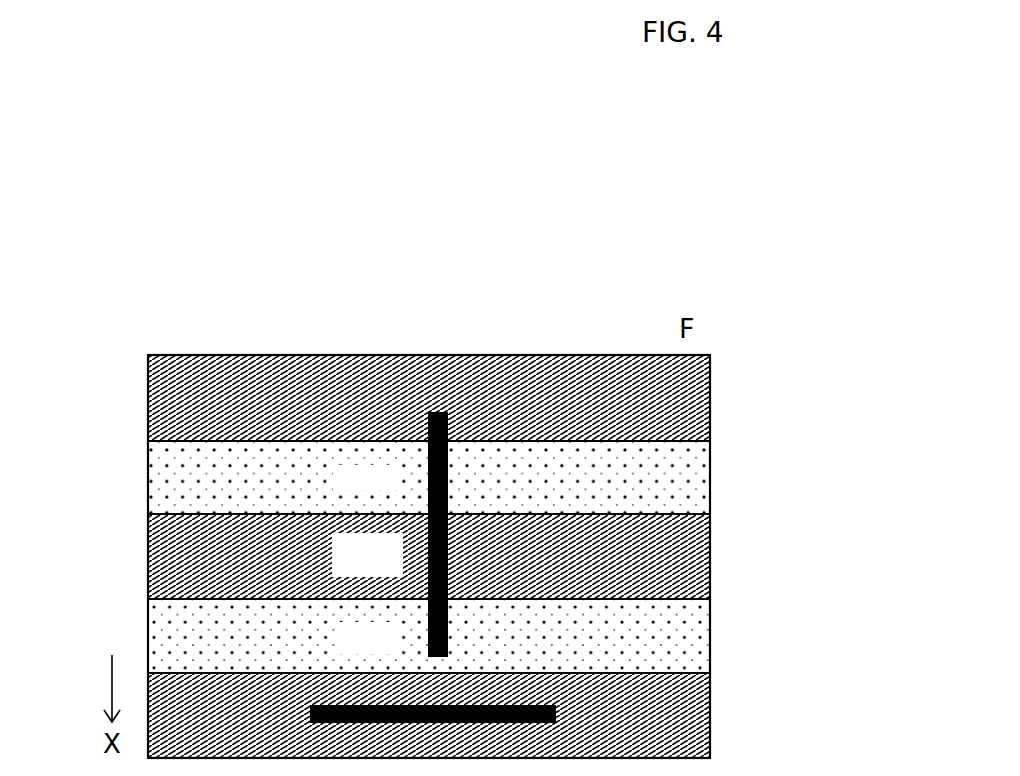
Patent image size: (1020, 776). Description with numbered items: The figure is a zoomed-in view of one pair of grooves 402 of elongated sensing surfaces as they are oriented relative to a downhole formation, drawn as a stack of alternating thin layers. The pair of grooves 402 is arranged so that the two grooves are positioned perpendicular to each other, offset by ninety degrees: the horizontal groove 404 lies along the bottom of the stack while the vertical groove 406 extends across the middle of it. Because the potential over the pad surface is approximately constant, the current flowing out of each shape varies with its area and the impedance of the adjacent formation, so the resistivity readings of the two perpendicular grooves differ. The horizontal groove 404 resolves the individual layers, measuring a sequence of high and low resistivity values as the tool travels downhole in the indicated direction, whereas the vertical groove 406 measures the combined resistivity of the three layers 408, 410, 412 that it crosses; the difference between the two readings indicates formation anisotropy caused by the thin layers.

The pair of grooves 402 is at (365, 556).
The horizontal groove 404 is at (556, 715).
The vertical groove 406 is at (448, 535).
The layer 408 is at (429, 477).
The layer 410 is at (429, 556).
The layer 412 is at (429, 636).